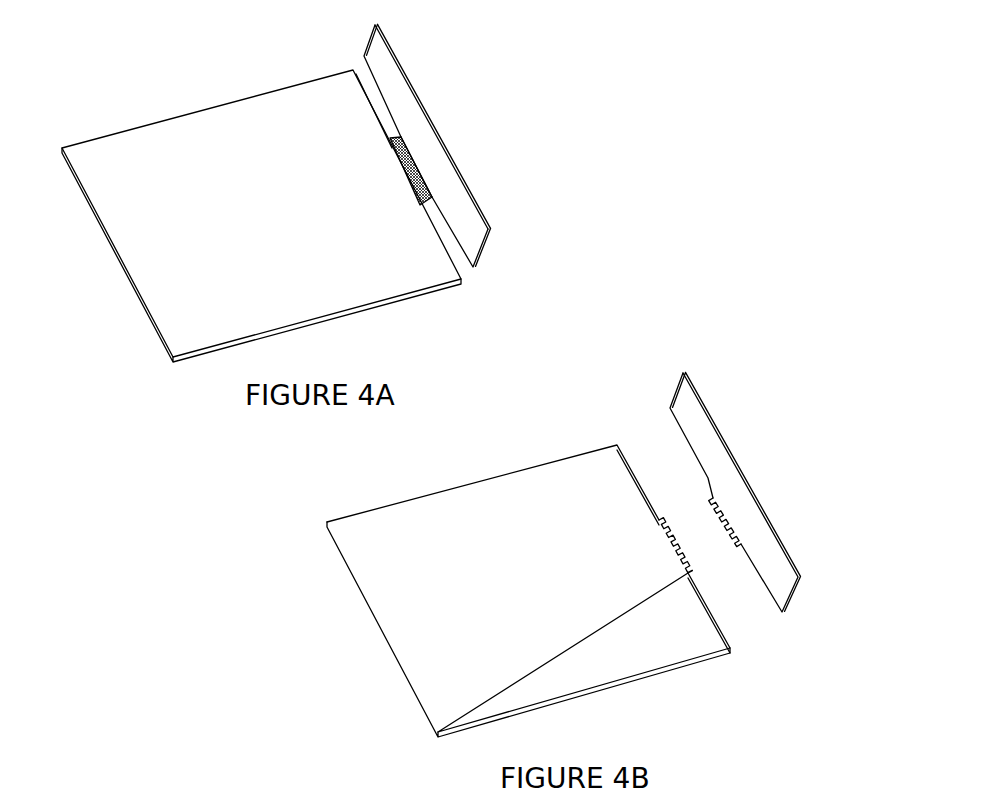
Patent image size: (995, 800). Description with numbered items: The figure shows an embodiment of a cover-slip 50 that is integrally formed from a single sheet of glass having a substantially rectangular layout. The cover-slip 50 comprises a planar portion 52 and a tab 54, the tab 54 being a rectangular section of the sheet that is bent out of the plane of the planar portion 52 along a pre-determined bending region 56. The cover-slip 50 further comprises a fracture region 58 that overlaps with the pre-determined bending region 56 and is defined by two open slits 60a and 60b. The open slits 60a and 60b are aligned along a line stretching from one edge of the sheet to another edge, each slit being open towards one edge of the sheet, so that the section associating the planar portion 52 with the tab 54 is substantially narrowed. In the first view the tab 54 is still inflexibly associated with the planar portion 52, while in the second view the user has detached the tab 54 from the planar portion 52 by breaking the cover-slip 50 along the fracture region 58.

In FIG. 4A, the cover-slip 50 is at (508, 75).
In FIG. 4B, the cover-slip 50 is at (790, 673).
In FIG. 4A, the planar portion 52 is at (126, 237).
In FIG. 4B, the planar portion 52 is at (400, 613).
In FIG. 4A, the tab 54 is at (432, 145).
In FIG. 4B, the tab 54 is at (738, 510).
In FIG. 4A, the pre-determined bending region 56 is at (403, 158).
In FIG. 4A, the fracture region 58 is at (416, 183).
In FIG. 4B, the fracture region 58 is at (710, 503).
In FIG. 4A, the open slit 60a is at (375, 98).
In FIG. 4A, the open slit 60b is at (450, 237).